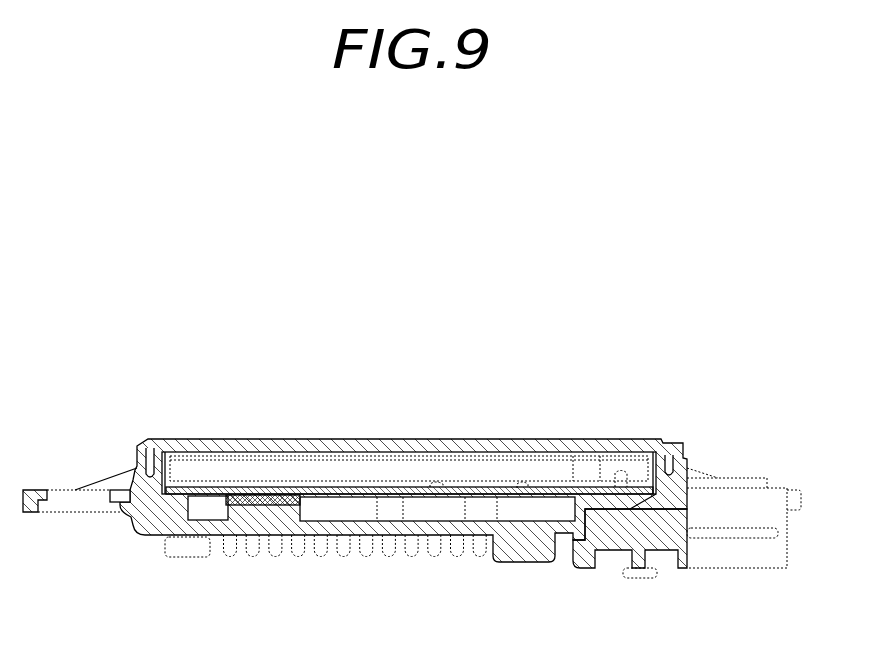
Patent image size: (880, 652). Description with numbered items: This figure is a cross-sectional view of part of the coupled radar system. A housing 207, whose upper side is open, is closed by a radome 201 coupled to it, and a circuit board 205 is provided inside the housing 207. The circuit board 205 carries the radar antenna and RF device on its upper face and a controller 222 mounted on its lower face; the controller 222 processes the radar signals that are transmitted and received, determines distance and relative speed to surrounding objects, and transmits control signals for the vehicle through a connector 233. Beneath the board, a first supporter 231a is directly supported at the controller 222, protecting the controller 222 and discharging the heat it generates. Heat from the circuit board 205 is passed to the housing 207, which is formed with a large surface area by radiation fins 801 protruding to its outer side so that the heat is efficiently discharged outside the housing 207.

The radome 201 is at (186, 443).
The circuit board 205 is at (342, 486).
The housing 207 is at (138, 520).
The controller 222 is at (263, 495).
The first supporter 231a is at (270, 527).
The connector 233 is at (660, 540).
The radiation fins 801 is at (412, 553).